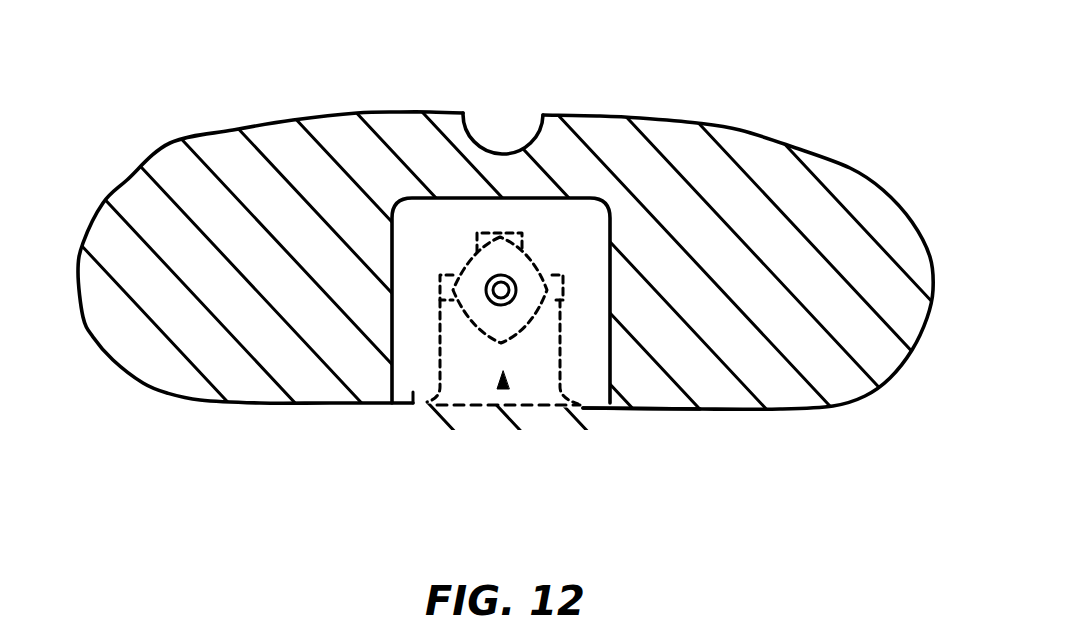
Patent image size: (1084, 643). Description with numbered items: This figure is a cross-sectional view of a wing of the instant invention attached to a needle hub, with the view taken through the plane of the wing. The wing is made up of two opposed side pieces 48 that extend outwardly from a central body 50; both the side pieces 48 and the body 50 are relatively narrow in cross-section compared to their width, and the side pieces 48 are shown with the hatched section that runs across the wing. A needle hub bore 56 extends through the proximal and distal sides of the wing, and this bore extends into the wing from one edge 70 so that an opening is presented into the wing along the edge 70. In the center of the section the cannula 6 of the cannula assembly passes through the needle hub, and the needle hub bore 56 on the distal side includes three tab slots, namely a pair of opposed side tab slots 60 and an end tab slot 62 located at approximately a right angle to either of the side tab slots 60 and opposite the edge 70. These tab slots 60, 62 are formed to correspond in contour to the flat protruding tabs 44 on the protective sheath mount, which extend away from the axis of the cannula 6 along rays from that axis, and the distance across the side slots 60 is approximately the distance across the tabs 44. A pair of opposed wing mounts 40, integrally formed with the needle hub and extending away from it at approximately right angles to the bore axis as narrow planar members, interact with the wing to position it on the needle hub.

The side pieces 48 is at (168, 172).
The side tab slots 60 is at (452, 290).
The tabs 44 is at (500, 233).
The end tab slot 62 is at (500, 235).
The central body 50 is at (413, 394).
The needle hub bore 56 is at (503, 386).
The cannula 6 is at (508, 295).
The edge 70 is at (713, 397).
The wing mounts 40 is at (597, 287).